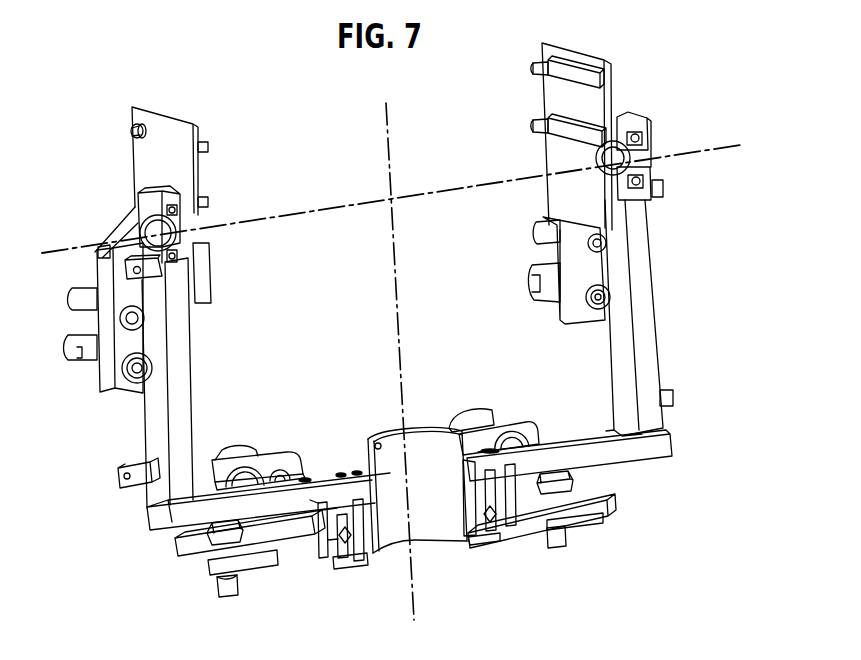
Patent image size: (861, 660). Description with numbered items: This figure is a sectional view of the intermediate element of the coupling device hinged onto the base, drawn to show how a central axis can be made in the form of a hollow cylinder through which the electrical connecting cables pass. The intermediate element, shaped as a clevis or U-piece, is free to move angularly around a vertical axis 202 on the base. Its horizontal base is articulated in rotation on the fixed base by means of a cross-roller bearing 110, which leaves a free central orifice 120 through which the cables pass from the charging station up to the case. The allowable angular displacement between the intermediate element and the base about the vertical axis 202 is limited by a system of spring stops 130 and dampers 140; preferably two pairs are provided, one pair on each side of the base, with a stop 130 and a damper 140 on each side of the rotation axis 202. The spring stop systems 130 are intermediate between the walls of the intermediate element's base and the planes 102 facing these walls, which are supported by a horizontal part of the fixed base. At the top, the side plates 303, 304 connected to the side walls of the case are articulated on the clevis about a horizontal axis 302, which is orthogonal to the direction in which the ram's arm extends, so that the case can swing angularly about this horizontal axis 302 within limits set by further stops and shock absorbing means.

The planes 102 is at (300, 458).
The cross-roller bearing 110 is at (358, 537).
The free central orifice 120 is at (432, 513).
The spring stops 130 is at (222, 476).
The dampers 140 is at (257, 447).
The vertical axis 202 is at (386, 123).
The horizontal axis 302 is at (718, 145).
The side plate 303 is at (148, 156).
The side plate 304 is at (556, 152).